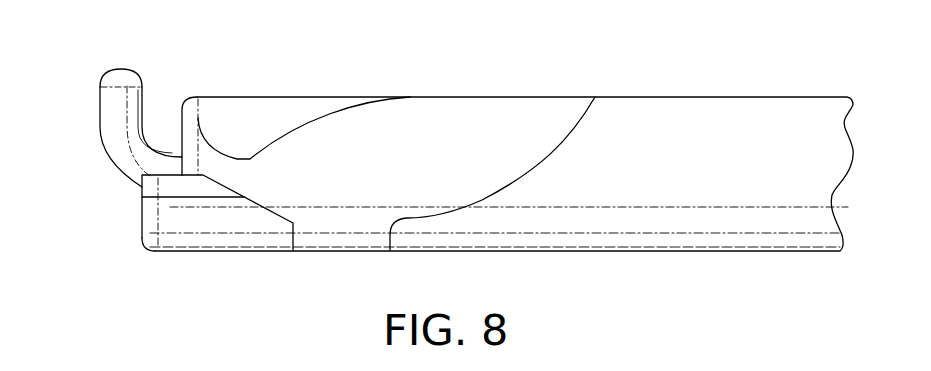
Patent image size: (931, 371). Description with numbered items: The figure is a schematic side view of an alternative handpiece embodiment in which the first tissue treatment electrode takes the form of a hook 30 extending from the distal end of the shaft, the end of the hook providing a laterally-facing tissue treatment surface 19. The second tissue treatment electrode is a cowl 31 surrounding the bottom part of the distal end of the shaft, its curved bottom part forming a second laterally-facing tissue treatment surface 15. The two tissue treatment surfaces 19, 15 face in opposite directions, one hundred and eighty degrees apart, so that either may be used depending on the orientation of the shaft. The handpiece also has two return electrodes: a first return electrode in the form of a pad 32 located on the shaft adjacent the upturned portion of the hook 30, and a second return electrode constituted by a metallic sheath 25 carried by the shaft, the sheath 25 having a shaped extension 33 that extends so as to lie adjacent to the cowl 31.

The tissue treatment surface 19 is at (119, 69).
The hook 30 is at (108, 105).
The pad 32 is at (237, 104).
The shaped extension 33 is at (412, 228).
The tissue treatment surface 15 is at (215, 255).
The metallic sheath 25 is at (657, 252).
The cowl 31 is at (143, 241).